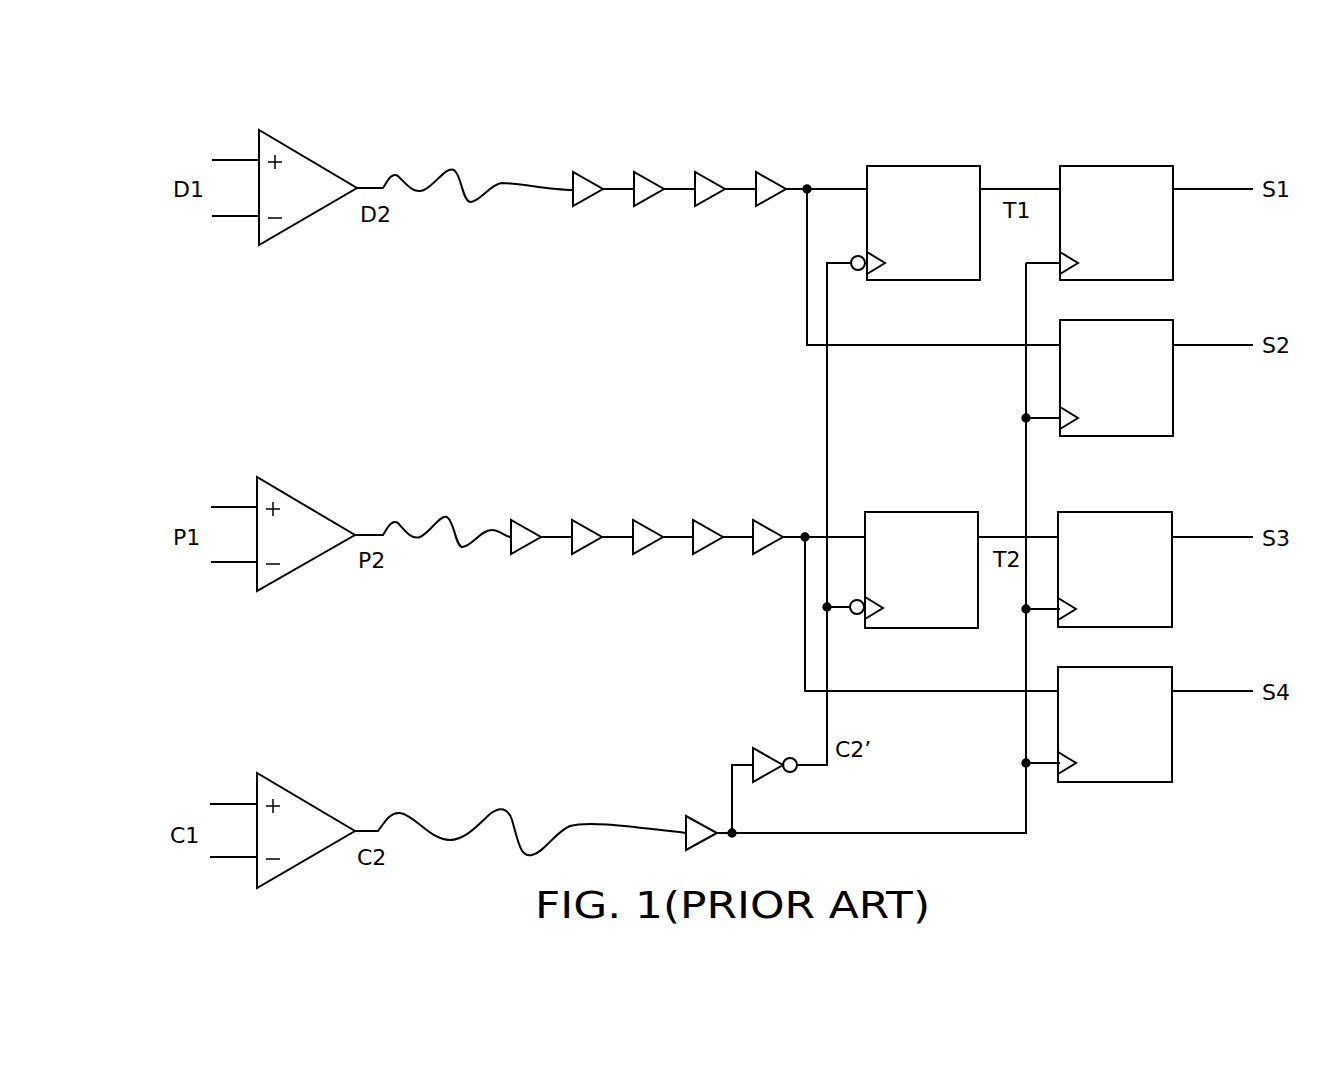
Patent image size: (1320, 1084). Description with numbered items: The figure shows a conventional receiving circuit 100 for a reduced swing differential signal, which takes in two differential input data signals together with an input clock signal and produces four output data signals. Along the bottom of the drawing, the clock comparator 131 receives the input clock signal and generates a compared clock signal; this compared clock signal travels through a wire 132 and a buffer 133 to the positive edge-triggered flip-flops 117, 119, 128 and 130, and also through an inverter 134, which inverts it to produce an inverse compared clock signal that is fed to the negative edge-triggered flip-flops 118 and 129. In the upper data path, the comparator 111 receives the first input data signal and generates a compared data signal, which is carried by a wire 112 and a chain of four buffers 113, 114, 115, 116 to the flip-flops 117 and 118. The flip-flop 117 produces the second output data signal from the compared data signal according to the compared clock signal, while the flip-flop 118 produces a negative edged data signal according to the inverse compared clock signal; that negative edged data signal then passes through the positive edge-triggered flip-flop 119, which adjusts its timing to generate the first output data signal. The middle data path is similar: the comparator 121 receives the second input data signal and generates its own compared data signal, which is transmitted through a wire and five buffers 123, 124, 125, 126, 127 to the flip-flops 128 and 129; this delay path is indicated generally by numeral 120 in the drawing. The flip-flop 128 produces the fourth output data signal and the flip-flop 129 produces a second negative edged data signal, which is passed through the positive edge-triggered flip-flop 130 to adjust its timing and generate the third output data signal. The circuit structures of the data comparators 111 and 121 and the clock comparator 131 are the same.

The receiving circuit 100 is at (154, 106).
The comparator 111 is at (310, 158).
The wire 112 is at (440, 172).
The buffer 113 is at (590, 178).
The buffer 114 is at (651, 178).
The buffer 115 is at (712, 178).
The buffer 116 is at (772, 178).
The flip-flop 117 is at (1173, 410).
The flip-flop 118 is at (917, 166).
The flip-flop 119 is at (1113, 166).
The second transmission line 120 is at (558, 468).
The comparator 121 is at (310, 506).
The buffer 123 is at (535, 553).
The buffer 124 is at (596, 553).
The buffer 125 is at (656, 553).
The buffer 126 is at (716, 553).
The buffer 127 is at (770, 527).
The flip-flop 128 is at (1172, 757).
The flip-flop 129 is at (922, 628).
The flip-flop 130 is at (1172, 602).
The comparator 131 is at (310, 803).
The wire 132 is at (480, 820).
The buffer 133 is at (686, 825).
The inverter 134 is at (752, 752).